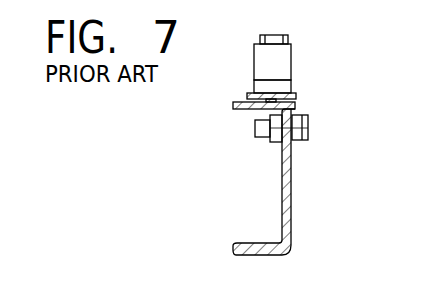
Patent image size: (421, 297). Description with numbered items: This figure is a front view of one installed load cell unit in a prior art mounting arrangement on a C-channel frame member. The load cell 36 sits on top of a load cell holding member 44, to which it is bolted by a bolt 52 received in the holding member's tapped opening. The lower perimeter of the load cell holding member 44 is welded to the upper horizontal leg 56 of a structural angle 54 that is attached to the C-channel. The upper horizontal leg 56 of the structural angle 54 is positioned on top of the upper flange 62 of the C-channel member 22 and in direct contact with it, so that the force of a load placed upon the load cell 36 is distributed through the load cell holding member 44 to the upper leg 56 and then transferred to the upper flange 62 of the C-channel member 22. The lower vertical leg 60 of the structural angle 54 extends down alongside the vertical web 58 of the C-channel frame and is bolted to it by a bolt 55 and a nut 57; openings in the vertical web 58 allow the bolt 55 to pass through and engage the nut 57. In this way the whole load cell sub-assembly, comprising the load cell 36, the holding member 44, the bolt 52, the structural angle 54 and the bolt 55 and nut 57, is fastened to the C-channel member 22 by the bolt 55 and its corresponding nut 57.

The C-channel member 22 is at (288, 198).
The load cell 36 is at (284, 57).
The load cell holding member 44 is at (284, 88).
The bolt 52 is at (277, 34).
The structural angle 54 is at (298, 98).
The bolt 55 is at (306, 125).
The upper horizontal leg 56 is at (261, 95).
The nut 57 is at (273, 138).
The vertical web 58 is at (292, 155).
The lower vertical leg 60 is at (292, 146).
The upper flange 62 is at (243, 110).